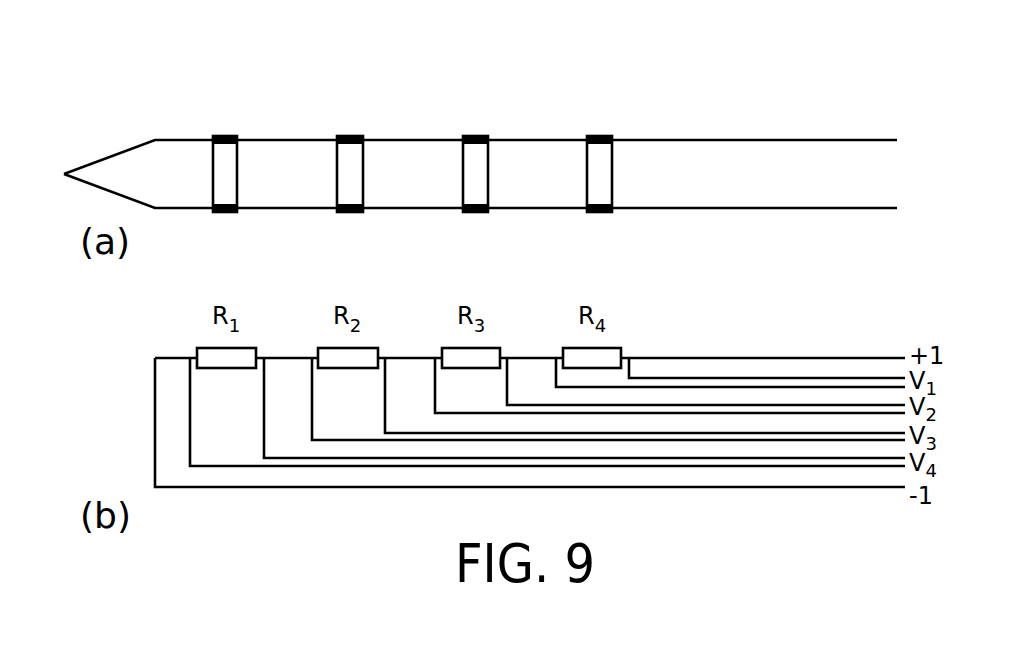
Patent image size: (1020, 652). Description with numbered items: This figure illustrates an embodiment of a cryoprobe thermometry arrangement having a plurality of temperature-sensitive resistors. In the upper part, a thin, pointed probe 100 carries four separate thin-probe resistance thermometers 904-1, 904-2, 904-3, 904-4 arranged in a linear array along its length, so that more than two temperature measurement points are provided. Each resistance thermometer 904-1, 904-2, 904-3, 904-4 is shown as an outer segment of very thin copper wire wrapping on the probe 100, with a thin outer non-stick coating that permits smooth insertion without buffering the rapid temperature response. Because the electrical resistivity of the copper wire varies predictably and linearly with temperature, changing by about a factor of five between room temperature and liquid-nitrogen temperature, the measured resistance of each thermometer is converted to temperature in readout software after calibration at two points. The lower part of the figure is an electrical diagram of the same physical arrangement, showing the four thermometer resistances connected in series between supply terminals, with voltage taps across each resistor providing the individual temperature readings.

The probe 100 is at (721, 168).
The resistance thermometer 904-1 is at (229, 130).
The resistance thermometer 904-2 is at (353, 131).
The resistance thermometer 904-3 is at (481, 130).
The resistance thermometer 904-4 is at (601, 130).